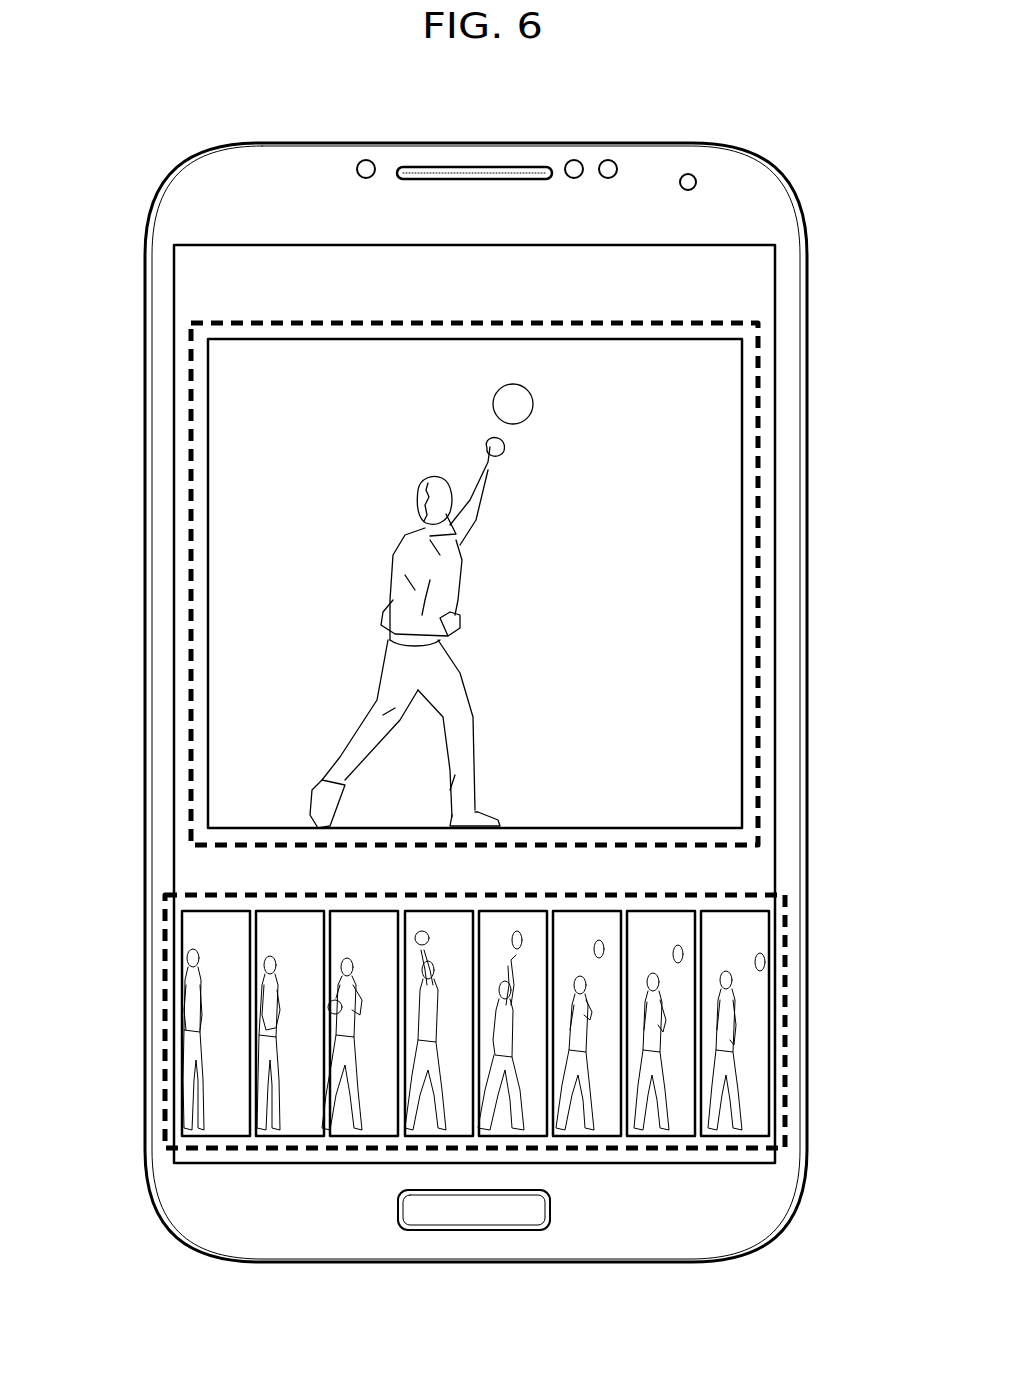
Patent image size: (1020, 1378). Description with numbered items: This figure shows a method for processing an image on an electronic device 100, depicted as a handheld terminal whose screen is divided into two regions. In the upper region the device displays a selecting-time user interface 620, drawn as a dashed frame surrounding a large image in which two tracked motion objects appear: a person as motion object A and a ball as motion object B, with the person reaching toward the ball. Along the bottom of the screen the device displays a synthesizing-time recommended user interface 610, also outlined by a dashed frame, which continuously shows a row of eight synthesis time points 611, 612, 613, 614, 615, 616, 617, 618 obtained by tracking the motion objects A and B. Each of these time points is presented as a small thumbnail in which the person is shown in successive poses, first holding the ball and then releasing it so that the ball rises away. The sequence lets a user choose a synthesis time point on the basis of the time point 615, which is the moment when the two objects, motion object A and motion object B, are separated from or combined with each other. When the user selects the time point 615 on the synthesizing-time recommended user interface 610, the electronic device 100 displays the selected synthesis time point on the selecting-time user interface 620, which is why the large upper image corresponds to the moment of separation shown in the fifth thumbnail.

The electronic device 100 is at (765, 163).
The synthesizing-time recommended user interface 610 is at (165, 1022).
The synthesis time point 611 is at (215, 1137).
The synthesis time point 612 is at (290, 1137).
The synthesis time point 613 is at (365, 1137).
The synthesis time point 614 is at (437, 1137).
The synthesis time point 615 is at (657, 608).
The synthesis time point 616 is at (583, 1137).
The synthesis time point 617 is at (658, 1137).
The synthesis time point 618 is at (732, 1137).
The selecting-time user interface 620 is at (186, 584).
The motion object A is at (402, 547).
The motion object B is at (518, 404).